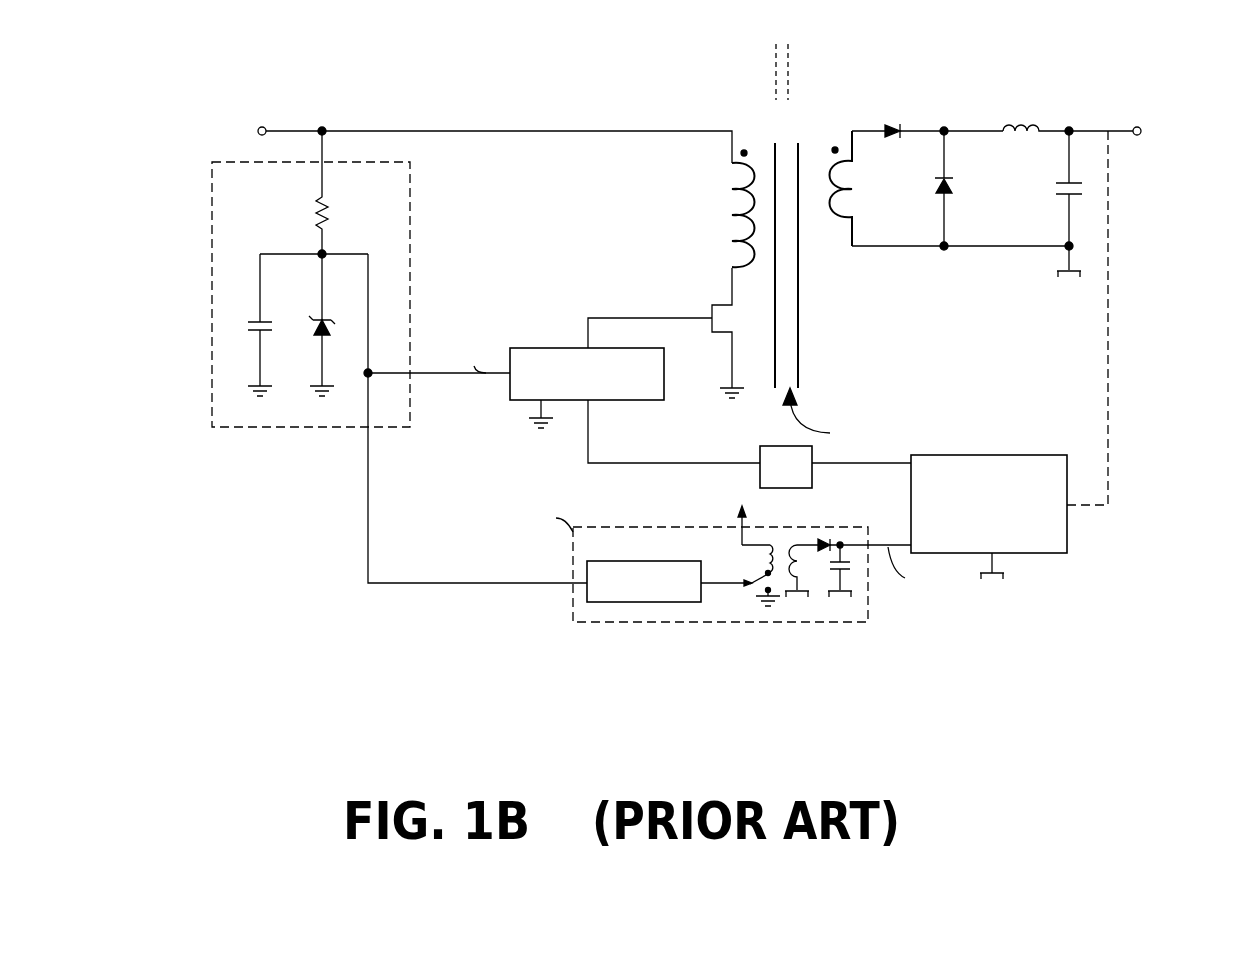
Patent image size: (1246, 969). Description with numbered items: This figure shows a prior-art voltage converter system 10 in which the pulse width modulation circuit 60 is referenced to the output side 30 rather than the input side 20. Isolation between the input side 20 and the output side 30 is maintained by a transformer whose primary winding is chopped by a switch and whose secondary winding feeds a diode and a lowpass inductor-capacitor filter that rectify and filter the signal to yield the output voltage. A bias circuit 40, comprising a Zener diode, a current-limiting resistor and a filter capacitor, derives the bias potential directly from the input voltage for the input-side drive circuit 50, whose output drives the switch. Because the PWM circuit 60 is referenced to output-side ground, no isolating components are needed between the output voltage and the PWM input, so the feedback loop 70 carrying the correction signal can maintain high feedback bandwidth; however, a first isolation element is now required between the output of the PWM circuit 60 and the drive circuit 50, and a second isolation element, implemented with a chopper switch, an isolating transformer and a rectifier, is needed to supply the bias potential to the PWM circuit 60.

The voltage converter system 10 is at (702, 349).
The input side 20 is at (776, 44).
The output side 30 is at (788, 44).
The bias circuit 40 is at (232, 428).
The drive circuit 50 is at (635, 400).
The pulse width modulator circuit 60 is at (992, 455).
The feedback loop 70 is at (1109, 302).